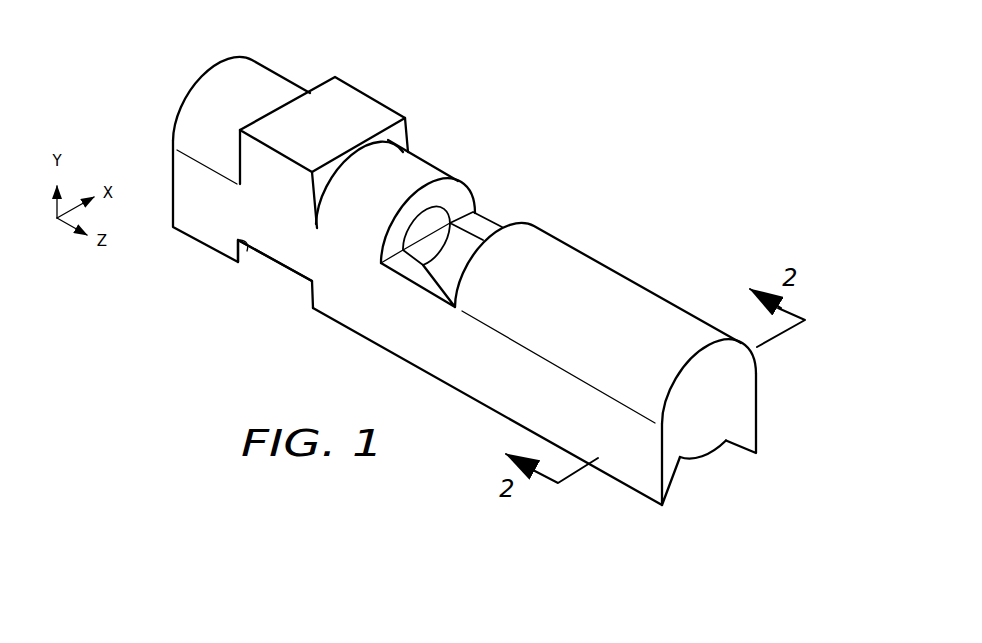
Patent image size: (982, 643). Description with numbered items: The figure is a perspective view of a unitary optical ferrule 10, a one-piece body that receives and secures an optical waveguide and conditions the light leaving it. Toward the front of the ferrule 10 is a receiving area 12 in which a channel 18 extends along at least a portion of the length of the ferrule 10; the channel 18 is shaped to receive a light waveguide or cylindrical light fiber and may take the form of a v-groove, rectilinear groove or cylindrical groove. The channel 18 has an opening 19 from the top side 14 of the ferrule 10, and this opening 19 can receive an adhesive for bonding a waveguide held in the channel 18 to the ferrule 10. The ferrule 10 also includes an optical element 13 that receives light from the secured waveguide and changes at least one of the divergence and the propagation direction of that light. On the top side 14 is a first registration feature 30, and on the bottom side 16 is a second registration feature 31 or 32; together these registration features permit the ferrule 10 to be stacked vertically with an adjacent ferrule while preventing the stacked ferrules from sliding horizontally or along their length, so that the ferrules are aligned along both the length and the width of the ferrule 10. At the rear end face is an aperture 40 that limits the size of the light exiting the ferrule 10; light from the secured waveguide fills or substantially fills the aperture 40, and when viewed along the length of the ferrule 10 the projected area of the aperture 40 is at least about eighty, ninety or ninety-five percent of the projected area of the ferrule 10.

The unitary optical ferrule 10 is at (675, 200).
The receiving area 12 is at (386, 88).
The optical element 13 is at (668, 290).
The top side 14 is at (597, 280).
The bottom side 16 is at (715, 450).
The channel 18 is at (463, 231).
The opening 19 is at (446, 191).
The first registration feature 30 is at (348, 100).
The second registration feature 31 is at (275, 271).
The second registration feature 32 is at (743, 453).
The aperture 40 is at (732, 378).